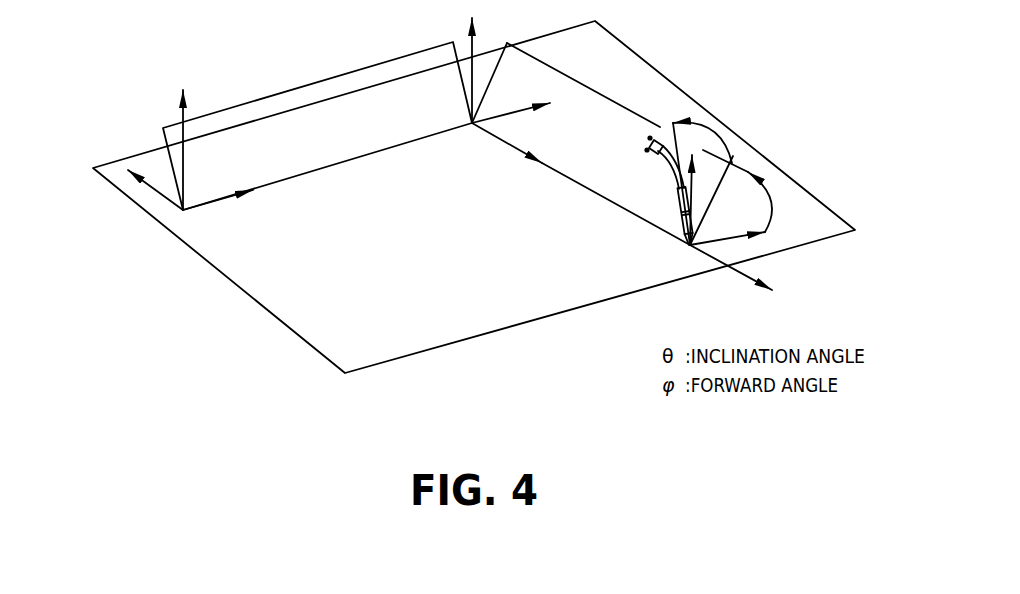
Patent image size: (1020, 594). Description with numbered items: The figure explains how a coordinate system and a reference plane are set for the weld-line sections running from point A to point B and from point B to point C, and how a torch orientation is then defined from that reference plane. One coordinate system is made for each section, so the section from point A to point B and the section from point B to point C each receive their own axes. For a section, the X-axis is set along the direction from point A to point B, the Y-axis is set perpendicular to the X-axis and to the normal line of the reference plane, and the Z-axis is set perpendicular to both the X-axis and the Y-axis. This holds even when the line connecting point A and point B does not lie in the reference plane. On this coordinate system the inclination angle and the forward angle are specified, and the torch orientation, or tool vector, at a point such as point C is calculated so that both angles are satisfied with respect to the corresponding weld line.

The point A is at (189, 150).
The point B is at (508, 83).
The point C is at (717, 208).